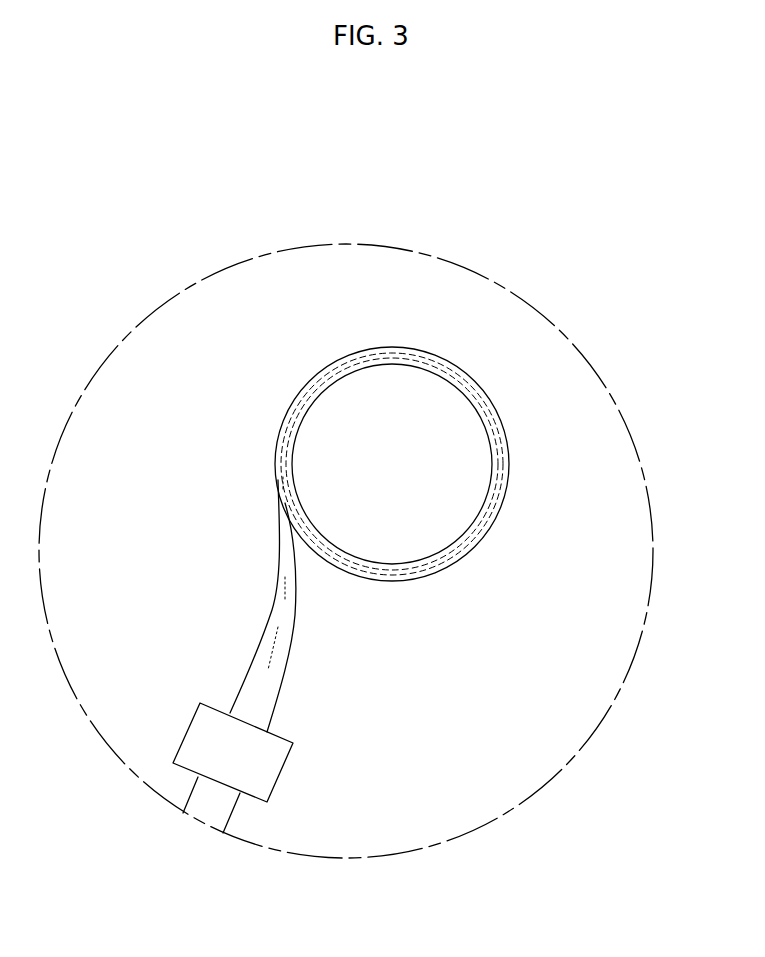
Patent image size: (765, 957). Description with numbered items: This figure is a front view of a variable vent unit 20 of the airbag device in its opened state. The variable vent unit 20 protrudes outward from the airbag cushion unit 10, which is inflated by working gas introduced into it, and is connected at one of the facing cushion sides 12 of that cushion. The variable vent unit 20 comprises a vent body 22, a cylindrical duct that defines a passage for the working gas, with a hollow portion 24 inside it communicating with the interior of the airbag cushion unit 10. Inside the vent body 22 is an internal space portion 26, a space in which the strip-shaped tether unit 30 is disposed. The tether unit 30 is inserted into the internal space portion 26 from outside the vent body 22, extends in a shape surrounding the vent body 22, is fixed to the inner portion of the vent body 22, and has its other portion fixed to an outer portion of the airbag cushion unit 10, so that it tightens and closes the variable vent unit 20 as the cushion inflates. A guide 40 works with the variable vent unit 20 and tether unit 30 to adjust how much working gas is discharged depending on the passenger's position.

The airbag cushion unit 10 is at (298, 214).
The cushion side 12 is at (380, 277).
The variable vent unit 20 is at (484, 348).
The vent body 22 is at (425, 350).
The hollow portion 24 is at (429, 436).
The internal space portion 26 is at (352, 562).
The tether unit 30 is at (263, 690).
The guide 40 is at (207, 747).